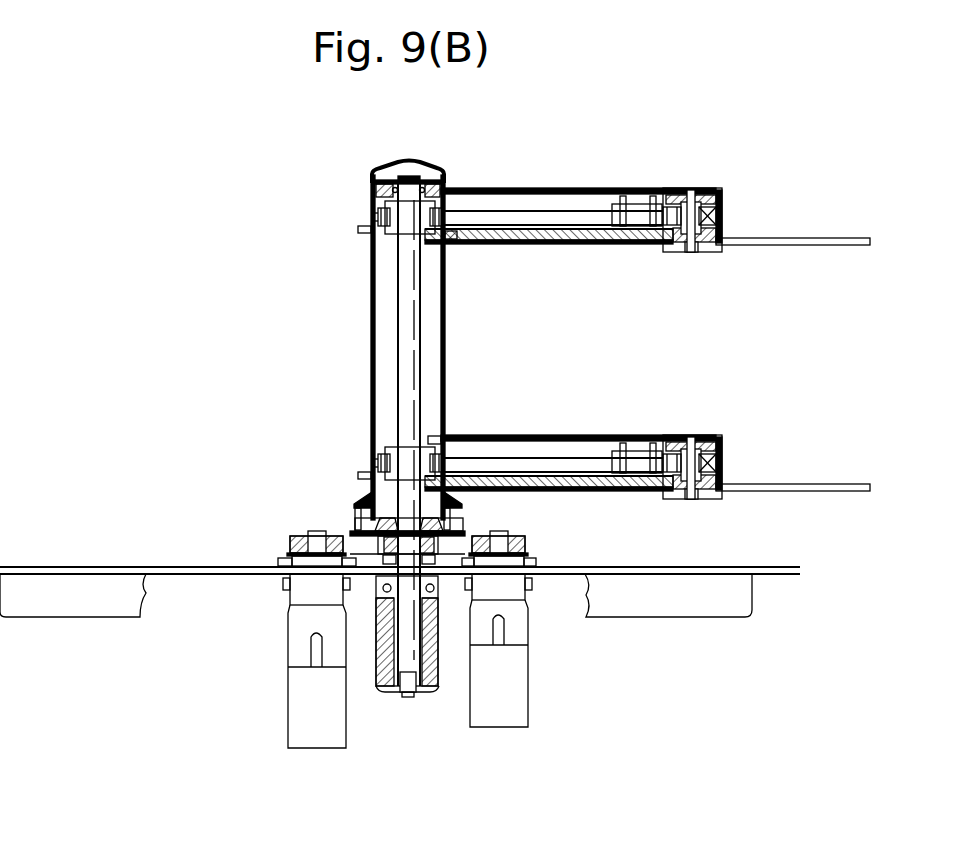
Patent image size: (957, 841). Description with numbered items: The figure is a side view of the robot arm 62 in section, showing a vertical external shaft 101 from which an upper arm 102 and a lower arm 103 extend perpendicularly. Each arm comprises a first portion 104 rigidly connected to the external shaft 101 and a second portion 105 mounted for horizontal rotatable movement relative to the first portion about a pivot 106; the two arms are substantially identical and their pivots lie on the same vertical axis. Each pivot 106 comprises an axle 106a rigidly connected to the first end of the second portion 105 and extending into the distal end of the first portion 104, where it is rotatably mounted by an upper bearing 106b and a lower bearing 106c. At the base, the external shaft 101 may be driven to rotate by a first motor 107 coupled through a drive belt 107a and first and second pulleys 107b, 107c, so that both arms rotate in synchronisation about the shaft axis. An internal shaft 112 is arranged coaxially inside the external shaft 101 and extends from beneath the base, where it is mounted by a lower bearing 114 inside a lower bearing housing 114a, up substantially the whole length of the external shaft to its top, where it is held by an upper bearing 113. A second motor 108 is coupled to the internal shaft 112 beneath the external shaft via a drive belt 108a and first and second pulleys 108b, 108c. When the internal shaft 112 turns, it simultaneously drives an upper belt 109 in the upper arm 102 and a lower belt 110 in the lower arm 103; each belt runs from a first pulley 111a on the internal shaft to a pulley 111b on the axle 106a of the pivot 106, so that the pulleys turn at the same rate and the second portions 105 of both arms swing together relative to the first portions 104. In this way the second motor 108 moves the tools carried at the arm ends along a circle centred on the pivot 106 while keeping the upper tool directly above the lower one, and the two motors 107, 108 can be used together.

The robot arm 62 is at (176, 285).
The external shaft 101 is at (370, 263).
The upper arm 102 is at (686, 134).
The lower arm 103 is at (652, 414).
The first arm portion 104 is at (498, 187).
The second arm portion 105 is at (800, 249).
The pivot 106 is at (714, 200).
The axle 106a is at (691, 256).
The upper bearing 106b is at (682, 194).
The lower bearing 106c is at (725, 233).
The first motor 107 is at (520, 612).
The drive belt 107a is at (469, 490).
The first pulley 107b is at (358, 508).
The second pulley 107c is at (526, 526).
The second motor 108 is at (294, 633).
The drive belt 108a is at (345, 560).
The first pulley 108b is at (290, 548).
The second pulley 108c is at (357, 530).
The upper belt 109 is at (528, 224).
The lower belt 110 is at (578, 458).
The first pulley 111a is at (380, 216).
The pulley 111b is at (728, 214).
The internal shaft 112 is at (406, 315).
The upper bearing 113 is at (396, 182).
The lower bearing 114 is at (424, 686).
The lower bearing housing 114a is at (380, 688).